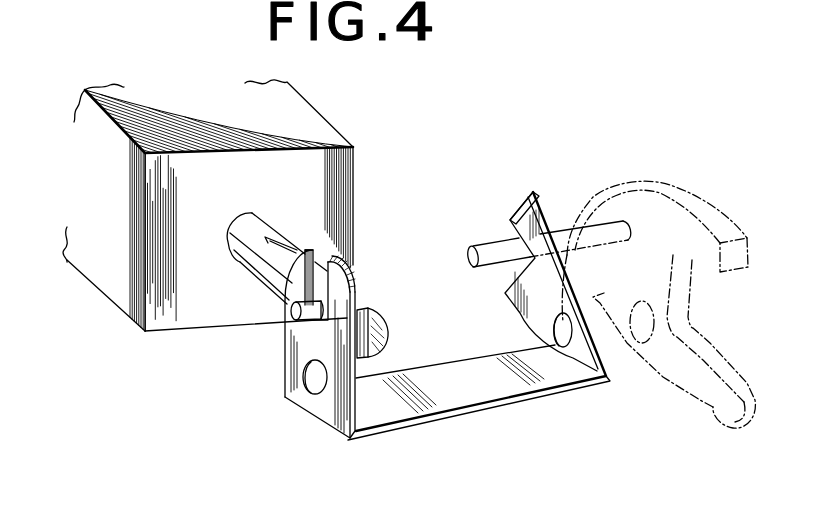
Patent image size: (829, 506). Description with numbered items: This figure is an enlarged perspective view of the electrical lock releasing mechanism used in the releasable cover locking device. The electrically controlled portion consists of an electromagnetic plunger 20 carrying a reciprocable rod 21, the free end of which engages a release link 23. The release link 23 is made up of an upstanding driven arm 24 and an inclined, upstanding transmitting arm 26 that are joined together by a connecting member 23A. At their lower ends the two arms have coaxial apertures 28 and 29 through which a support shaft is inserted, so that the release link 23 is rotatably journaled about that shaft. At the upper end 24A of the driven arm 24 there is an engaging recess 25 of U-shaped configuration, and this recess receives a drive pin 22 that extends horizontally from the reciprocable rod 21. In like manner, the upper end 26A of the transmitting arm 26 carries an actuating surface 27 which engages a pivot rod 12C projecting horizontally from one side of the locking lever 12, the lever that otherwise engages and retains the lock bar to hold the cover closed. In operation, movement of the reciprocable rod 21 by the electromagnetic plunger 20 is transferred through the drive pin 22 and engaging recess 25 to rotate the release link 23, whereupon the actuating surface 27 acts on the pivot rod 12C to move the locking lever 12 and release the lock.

The locking lever 12 is at (656, 288).
The pivot rod 12C is at (559, 215).
The electromagnetic plunger 20 is at (222, 114).
The reciprocable rod 21 is at (257, 216).
The drive pin 22 is at (286, 302).
The release link 23 is at (479, 327).
The connecting member 23A is at (483, 392).
The driven arm 24 is at (292, 348).
The upper end of driven arm 24A is at (353, 276).
The engaging recess 25 is at (318, 252).
The transmitting arm 26 is at (551, 287).
The upper end of transmitting arm 26A is at (522, 205).
The actuating surface 27 is at (503, 237).
The aperture 28 is at (310, 397).
The aperture 29 is at (597, 380).